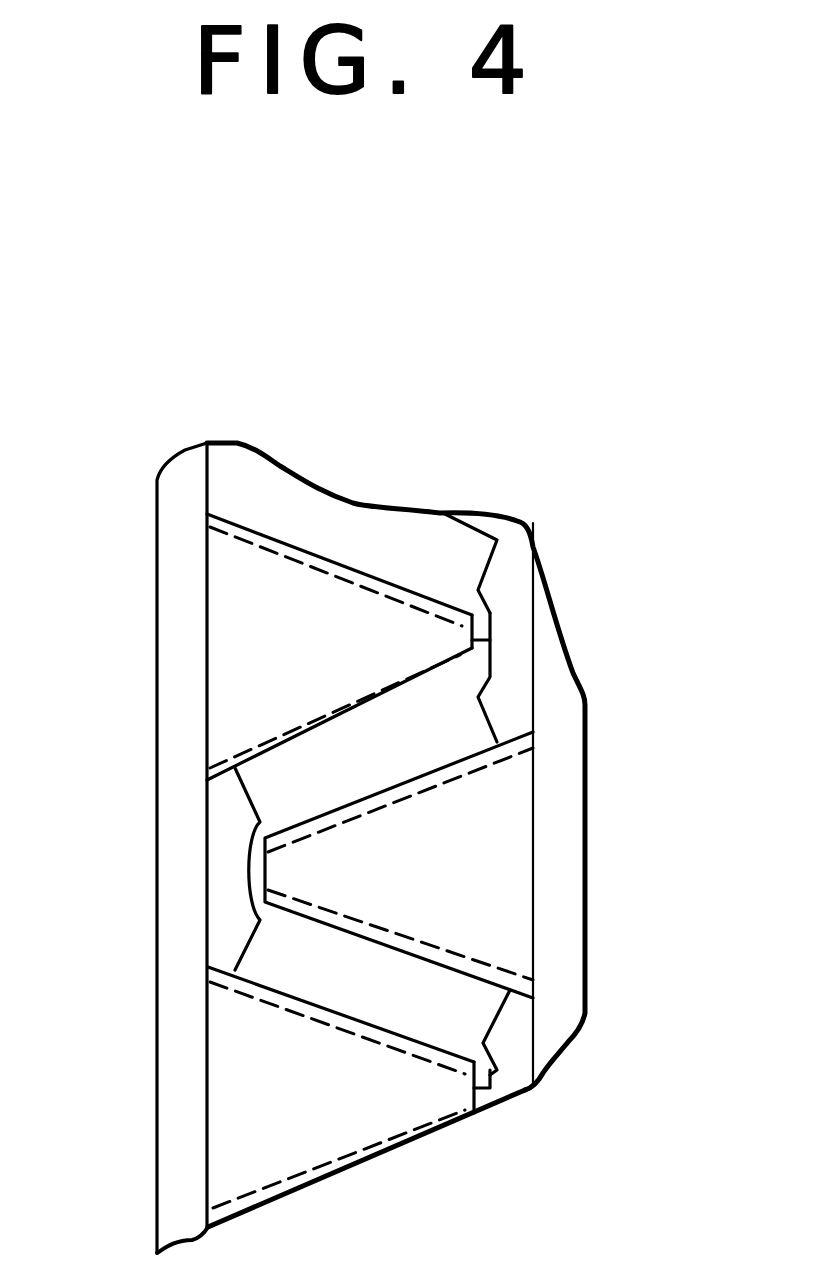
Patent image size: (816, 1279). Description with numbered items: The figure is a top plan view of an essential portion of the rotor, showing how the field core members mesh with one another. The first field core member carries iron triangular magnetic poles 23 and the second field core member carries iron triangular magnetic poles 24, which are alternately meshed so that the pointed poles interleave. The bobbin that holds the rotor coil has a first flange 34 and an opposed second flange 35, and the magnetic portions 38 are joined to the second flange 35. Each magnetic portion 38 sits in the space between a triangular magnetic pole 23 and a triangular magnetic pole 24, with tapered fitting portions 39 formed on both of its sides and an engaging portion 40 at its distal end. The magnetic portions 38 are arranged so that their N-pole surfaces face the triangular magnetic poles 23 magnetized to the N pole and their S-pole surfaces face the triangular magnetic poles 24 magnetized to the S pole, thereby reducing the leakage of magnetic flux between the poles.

The triangular magnetic pole 23 is at (475, 808).
The triangular magnetic pole 24 is at (230, 626).
The first flange 34 is at (565, 905).
The second flange 35 is at (190, 800).
The magnetic portion 38 is at (313, 510).
The tapered fitting portion 39 is at (400, 592).
The engaging portion 40 is at (478, 630).